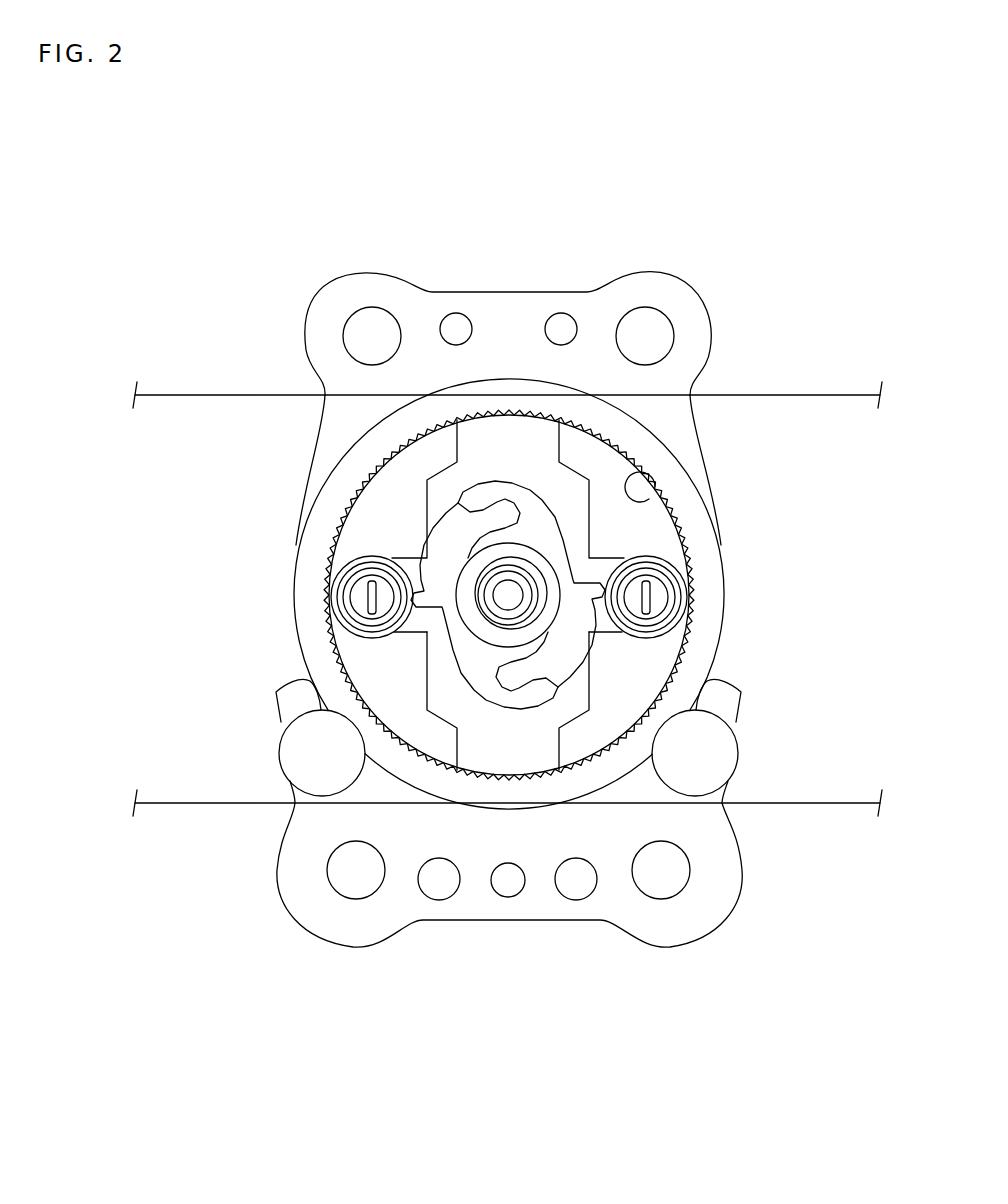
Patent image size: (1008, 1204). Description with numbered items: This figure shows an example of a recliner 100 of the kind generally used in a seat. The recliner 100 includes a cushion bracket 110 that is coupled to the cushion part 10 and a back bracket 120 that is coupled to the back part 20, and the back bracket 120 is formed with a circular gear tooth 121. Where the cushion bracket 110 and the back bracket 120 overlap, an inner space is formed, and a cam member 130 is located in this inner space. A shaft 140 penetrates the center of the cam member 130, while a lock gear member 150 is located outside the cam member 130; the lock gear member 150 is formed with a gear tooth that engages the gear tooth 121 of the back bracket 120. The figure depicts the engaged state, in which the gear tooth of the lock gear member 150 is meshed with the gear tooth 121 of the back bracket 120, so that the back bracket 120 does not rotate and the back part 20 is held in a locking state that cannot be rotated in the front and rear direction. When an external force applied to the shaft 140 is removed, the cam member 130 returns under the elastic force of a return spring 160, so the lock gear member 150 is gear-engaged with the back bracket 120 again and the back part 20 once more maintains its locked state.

The cushion part 10 is at (818, 806).
The back part 20 is at (807, 394).
The recliner 100 is at (657, 258).
The cushion bracket 110 is at (475, 892).
The back bracket 120 is at (503, 308).
The gear tooth 121 is at (648, 489).
The cam member 130 is at (443, 563).
The shaft 140 is at (508, 596).
The lock gear member 150 is at (497, 455).
The return spring 160 is at (332, 600).